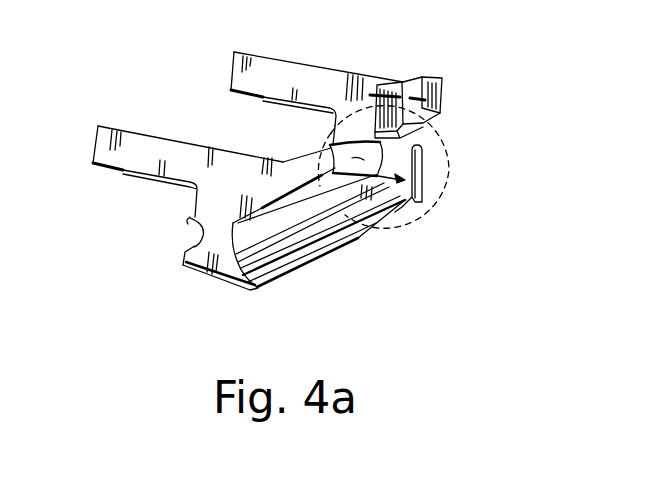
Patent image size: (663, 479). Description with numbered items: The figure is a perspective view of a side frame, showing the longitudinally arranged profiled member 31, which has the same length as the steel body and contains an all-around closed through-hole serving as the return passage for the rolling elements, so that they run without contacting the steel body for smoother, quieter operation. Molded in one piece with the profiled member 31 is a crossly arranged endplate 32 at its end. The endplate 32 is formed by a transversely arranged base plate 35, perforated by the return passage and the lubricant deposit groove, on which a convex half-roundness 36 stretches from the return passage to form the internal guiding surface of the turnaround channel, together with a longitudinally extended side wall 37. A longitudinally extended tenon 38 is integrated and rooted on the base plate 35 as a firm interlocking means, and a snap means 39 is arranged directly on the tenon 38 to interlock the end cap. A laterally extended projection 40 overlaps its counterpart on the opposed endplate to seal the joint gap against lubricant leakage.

The profiled member 31 is at (290, 192).
The endplate 32 is at (195, 191).
The base plate 35 is at (307, 80).
The convex half-roundness 36 is at (362, 228).
The side wall 37 is at (423, 172).
The tenon 38 is at (377, 82).
The snap means 39 is at (425, 99).
The laterally extended projection 40 is at (233, 68).